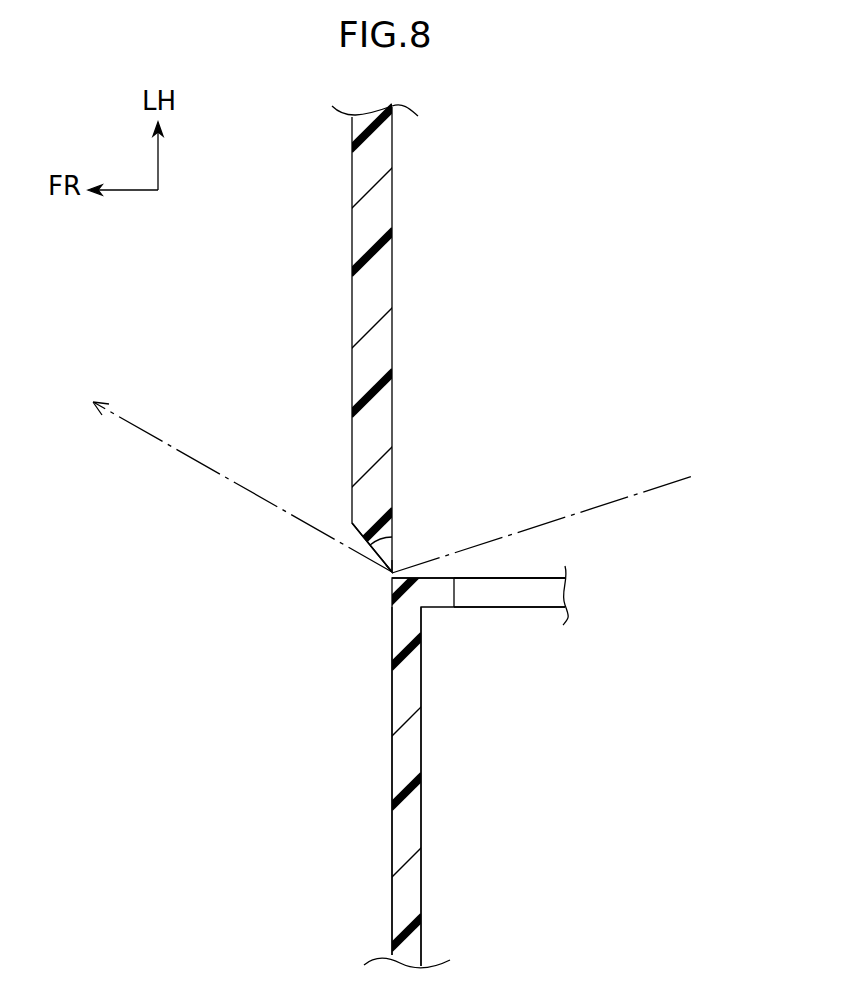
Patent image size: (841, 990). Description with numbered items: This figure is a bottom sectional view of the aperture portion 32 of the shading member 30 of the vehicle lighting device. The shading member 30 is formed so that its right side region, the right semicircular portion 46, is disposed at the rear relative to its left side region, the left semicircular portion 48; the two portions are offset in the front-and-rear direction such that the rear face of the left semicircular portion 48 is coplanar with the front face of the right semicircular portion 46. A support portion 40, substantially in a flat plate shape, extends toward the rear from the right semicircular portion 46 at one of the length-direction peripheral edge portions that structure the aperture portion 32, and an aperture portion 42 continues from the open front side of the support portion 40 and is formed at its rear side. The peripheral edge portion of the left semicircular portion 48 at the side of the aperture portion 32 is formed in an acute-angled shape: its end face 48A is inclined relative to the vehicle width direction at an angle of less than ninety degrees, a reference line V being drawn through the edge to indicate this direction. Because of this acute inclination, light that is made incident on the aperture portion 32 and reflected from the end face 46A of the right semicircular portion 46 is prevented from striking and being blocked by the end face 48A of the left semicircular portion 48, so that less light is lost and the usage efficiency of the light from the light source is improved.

The shading member 30 is at (393, 210).
The left semicircular portion 48 is at (385, 353).
The end face 48A is at (358, 539).
The aperture portion 32 is at (400, 575).
The virtual line V is at (310, 525).
The support portion 40 is at (480, 609).
The end face 46A is at (443, 579).
The aperture portion 42 is at (525, 597).
The right semicircular portion 46 is at (418, 817).